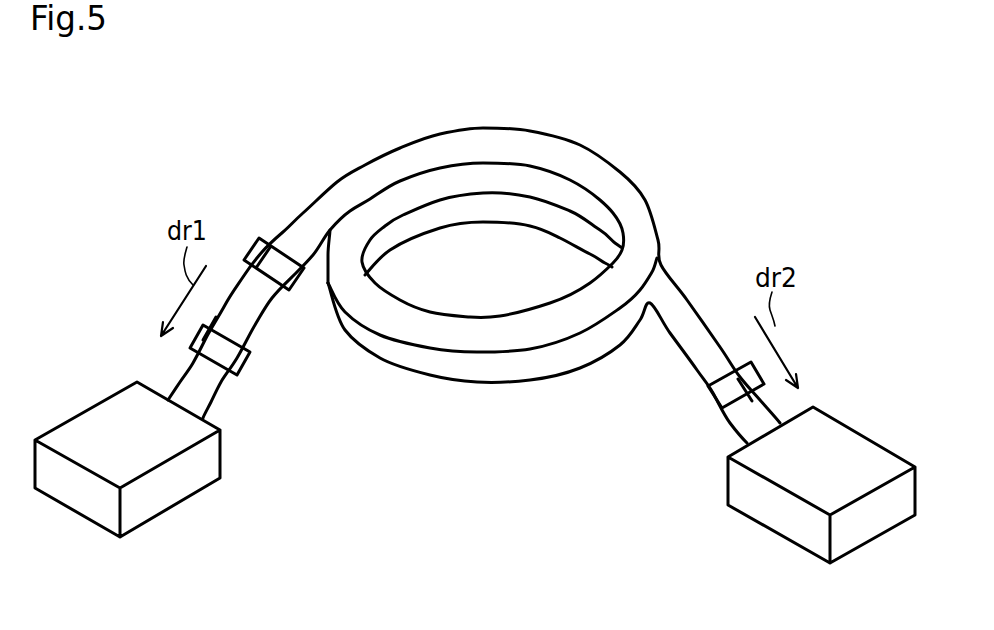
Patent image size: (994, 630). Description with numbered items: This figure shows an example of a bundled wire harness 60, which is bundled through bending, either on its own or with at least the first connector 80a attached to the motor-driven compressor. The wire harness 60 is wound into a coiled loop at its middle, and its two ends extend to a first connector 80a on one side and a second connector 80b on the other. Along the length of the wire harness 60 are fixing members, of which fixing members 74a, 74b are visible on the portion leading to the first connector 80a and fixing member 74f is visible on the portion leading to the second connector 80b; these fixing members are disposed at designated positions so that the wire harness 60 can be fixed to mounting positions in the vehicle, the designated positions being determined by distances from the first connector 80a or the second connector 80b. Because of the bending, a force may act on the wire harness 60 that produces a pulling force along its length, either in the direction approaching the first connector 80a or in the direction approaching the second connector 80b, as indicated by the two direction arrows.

The wire harness 60 is at (482, 55).
The fixing member 74a is at (245, 362).
The fixing member 74b is at (303, 278).
The fixing member 74f is at (709, 397).
The first connector 80a is at (220, 458).
The second connector 80b is at (726, 477).